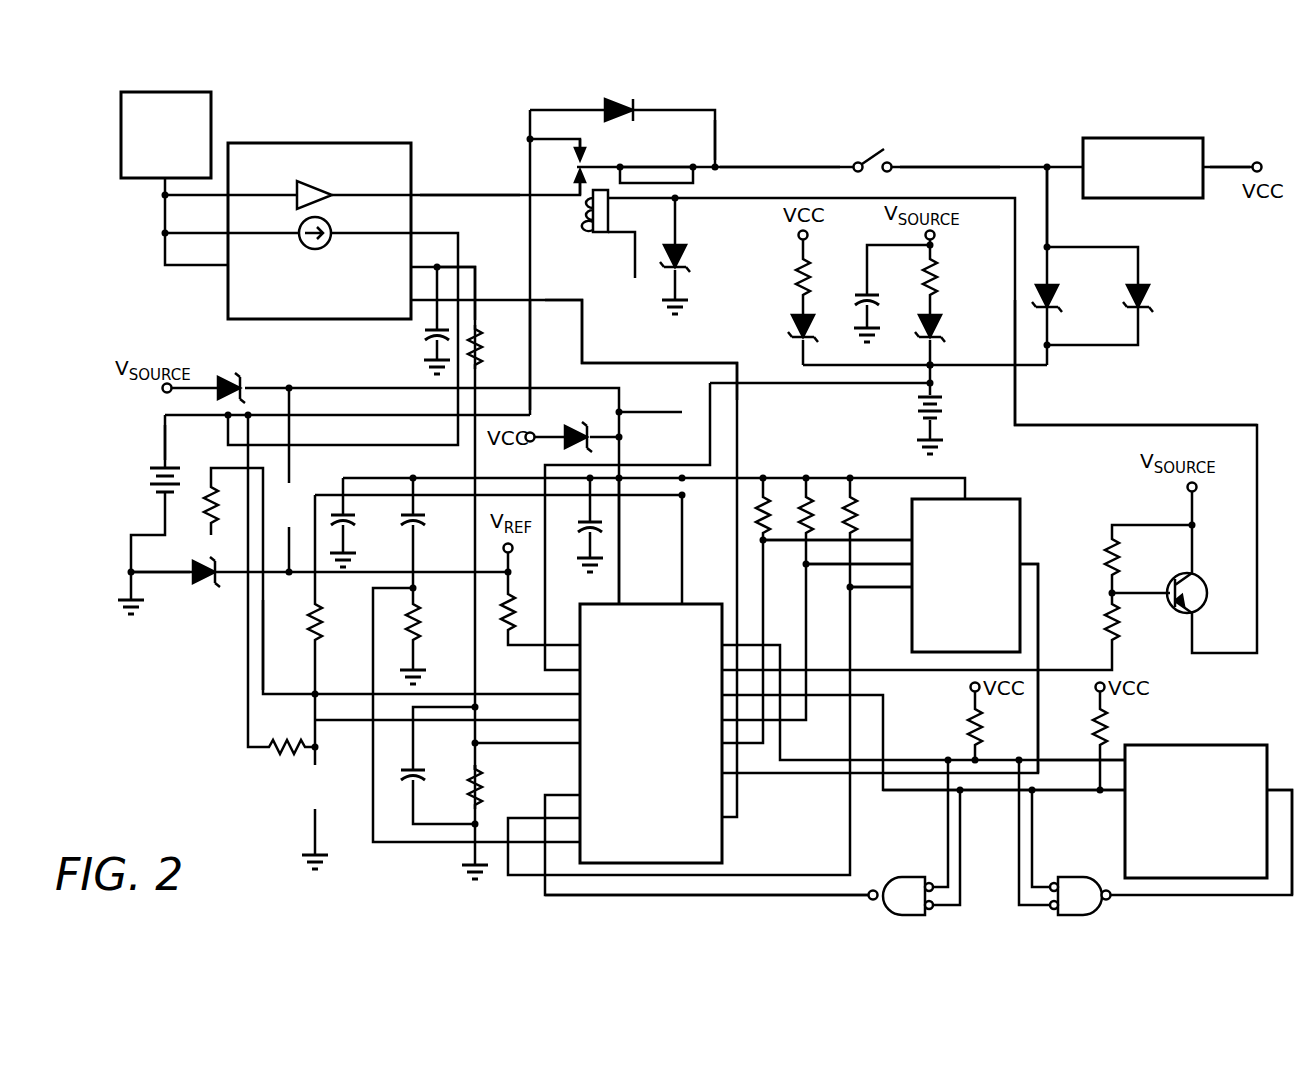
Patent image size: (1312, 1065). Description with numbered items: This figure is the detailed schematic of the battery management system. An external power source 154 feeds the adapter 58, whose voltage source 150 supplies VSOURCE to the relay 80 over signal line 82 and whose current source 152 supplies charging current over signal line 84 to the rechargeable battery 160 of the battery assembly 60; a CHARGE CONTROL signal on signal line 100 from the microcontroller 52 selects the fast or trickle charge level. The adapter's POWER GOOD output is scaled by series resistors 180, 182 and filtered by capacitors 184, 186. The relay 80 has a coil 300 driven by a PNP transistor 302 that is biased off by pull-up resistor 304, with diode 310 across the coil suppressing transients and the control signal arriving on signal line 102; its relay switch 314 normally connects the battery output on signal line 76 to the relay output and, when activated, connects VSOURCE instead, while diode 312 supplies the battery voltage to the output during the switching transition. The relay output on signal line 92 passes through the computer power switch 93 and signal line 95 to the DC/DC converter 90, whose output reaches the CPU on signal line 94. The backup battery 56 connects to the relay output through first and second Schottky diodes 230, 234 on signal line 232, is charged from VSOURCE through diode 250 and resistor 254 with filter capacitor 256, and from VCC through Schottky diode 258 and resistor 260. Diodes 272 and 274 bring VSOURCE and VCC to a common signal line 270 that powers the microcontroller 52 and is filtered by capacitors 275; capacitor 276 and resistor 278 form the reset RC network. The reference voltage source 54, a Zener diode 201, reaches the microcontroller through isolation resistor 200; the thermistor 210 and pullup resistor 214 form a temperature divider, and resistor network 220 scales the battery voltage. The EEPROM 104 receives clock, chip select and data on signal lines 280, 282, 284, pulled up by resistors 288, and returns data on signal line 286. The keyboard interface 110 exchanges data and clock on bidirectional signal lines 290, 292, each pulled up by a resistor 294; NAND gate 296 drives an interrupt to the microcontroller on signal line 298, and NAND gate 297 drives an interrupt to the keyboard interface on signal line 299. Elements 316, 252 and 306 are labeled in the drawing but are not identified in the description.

The external source of power 154 is at (212, 125).
The power adapter 58 is at (345, 143).
The voltage source 150 is at (318, 181).
The current source 152 is at (325, 222).
The signal line 82 is at (460, 194).
The signal line 84 is at (459, 270).
The filter capacitor 184 is at (420, 336).
The series resistor 180 is at (480, 362).
The signal line 76 is at (530, 363).
The diode 312 is at (612, 98).
The relay switch 316 is at (538, 135).
The relay switch 314 is at (585, 160).
The relay 80 is at (701, 114).
The signal line 92 is at (772, 166).
The switch 93 is at (868, 146).
The signal line 95 is at (933, 150).
The DC/DC converter 90 is at (1158, 138).
The signal line 94 is at (1235, 160).
The coil 300 is at (593, 232).
The diode 310 is at (685, 260).
The signal line 100 is at (556, 302).
The resistor 260 is at (795, 262).
The Schottky diode 258 is at (793, 328).
The filter capacitor 256 is at (853, 300).
The resistor 254 is at (942, 272).
The diode 250 is at (942, 332).
The node 252 is at (940, 360).
The backup battery 56 is at (910, 405).
The signal line 232 is at (1048, 200).
The first Schottky diode 230 is at (1060, 298).
The second Schottky diode 234 is at (1150, 298).
The signal line 102 is at (1105, 426).
The diode 272 is at (225, 378).
The battery assembly 60 is at (134, 444).
The rechargeable battery 160 is at (152, 474).
The thermistor 210 is at (205, 485).
The Zener diode 201 is at (192, 564).
The reference voltage source 54 is at (192, 617).
The resistor 214 is at (318, 623).
The filter capacitors 275 is at (355, 522).
The capacitor 276 is at (425, 522).
The resistor 278 is at (416, 627).
The diode 274 is at (566, 430).
The common signal line 270 is at (620, 580).
The isolation resistor 200 is at (503, 630).
The microcontroller 52 is at (697, 594).
The pull up resistors 288 is at (770, 495).
The signal line 284 is at (882, 540).
The signal line 282 is at (840, 560).
The signal line 280 is at (870, 595).
The memory unit 104 is at (985, 499).
The signal line 286 is at (1042, 590).
The pull-up resistor 304 is at (1105, 548).
The resistor 306 is at (1105, 630).
The PNP transistor 302 is at (1208, 592).
The pull up resistor 294 is at (985, 720).
The bidirectional signal line 290 is at (1065, 757).
The keyboard interface 110 is at (1078, 745).
The signal line 299 is at (1280, 775).
The bidirectional signal line 292 is at (982, 794).
The signal line 298 is at (853, 870).
The NAND gate 296 is at (913, 877).
The NAND gate 297 is at (1075, 876).
The filter capacitor 186 is at (425, 780).
The series resistor 182 is at (483, 790).
The resistor network 220 is at (281, 774).